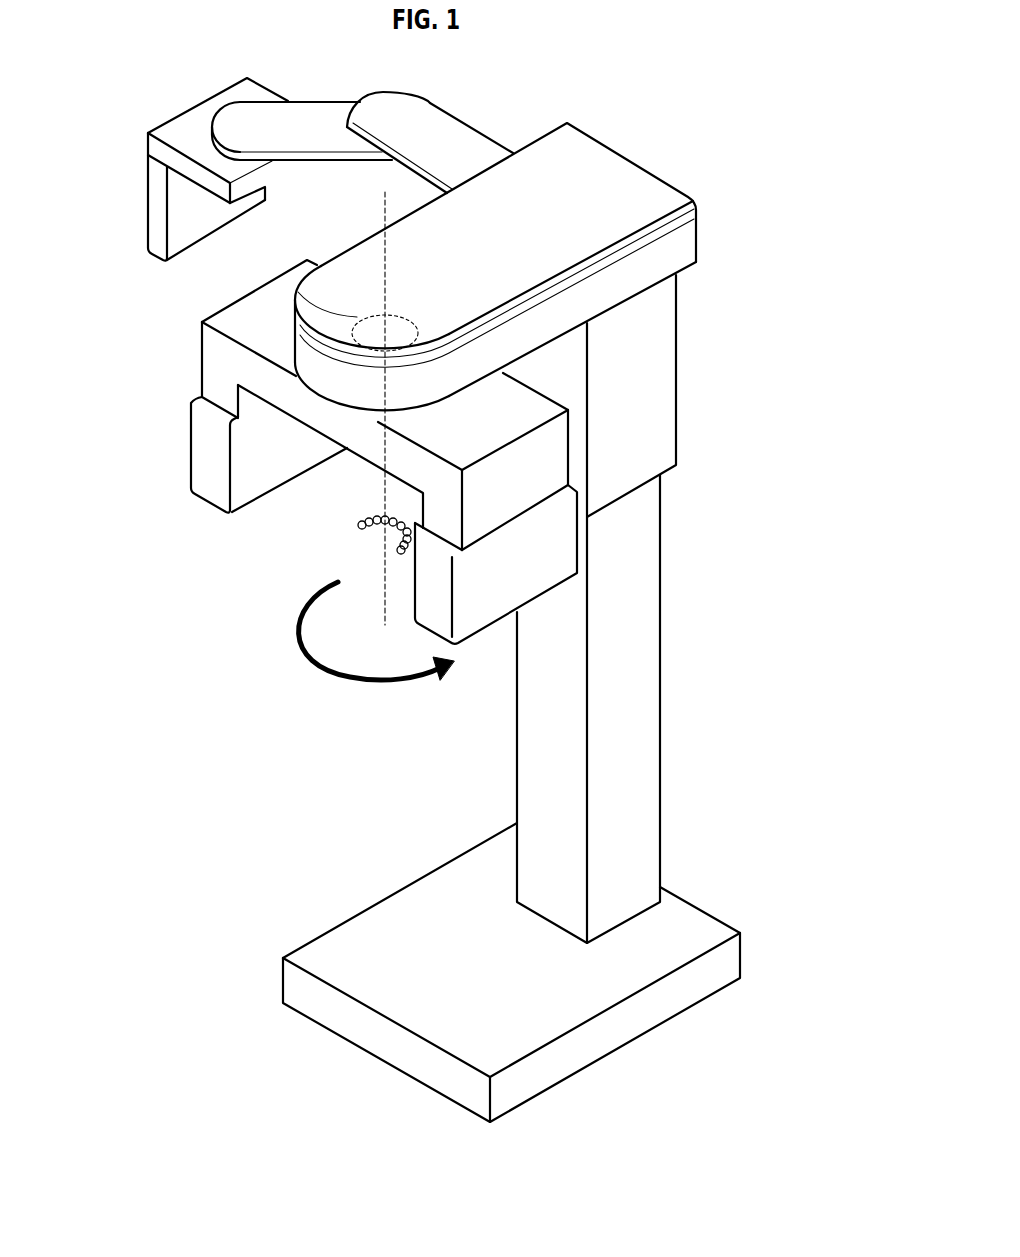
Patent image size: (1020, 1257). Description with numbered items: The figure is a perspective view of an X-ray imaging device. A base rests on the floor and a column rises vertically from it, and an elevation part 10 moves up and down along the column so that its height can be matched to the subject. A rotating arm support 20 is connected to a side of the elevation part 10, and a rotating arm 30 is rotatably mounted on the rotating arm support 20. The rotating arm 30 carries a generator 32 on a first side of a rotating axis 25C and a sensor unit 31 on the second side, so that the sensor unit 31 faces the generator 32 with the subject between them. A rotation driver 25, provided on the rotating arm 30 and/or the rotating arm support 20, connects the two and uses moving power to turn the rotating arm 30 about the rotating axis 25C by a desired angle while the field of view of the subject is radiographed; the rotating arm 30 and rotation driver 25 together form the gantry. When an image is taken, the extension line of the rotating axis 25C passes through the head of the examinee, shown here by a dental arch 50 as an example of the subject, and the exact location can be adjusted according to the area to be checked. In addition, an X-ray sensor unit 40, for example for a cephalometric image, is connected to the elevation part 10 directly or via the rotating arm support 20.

The elevation part 10 is at (657, 380).
The rotating arm support 20 is at (613, 177).
The rotation driver 25 is at (303, 262).
The rotating axis 25C is at (385, 203).
The rotating arm 30 is at (217, 363).
The sensor unit 31 is at (553, 545).
The generator 32 is at (207, 455).
The X-ray sensor unit 40 is at (160, 205).
The dental arch 50 is at (356, 516).